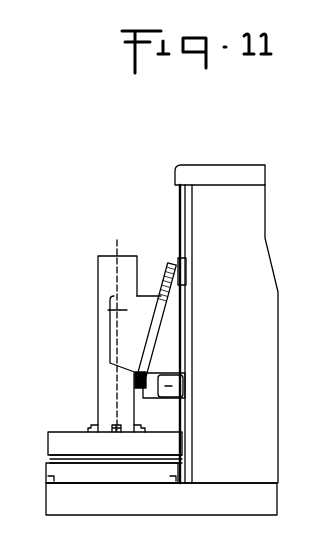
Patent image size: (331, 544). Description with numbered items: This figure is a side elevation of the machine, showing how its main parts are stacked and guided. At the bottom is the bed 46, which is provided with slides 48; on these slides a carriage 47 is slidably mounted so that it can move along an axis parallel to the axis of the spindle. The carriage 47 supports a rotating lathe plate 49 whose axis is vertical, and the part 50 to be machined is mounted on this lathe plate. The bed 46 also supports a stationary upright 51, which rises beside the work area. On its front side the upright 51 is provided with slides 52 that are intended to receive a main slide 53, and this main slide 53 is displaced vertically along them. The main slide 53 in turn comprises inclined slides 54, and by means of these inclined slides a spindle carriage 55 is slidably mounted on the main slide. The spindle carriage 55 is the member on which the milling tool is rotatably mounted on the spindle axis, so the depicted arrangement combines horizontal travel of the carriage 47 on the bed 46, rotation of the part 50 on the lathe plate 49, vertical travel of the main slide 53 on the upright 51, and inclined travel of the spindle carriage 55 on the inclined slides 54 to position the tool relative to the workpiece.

The bed 46 is at (219, 510).
The carriage 47 is at (130, 478).
The slides 48 is at (176, 478).
The rotating lathe plate 49 is at (71, 437).
The part to be machined 50 is at (108, 380).
The stationary upright 51 is at (236, 362).
The slides 52 is at (190, 208).
The main slide 53 is at (172, 321).
The inclined slides 54 is at (160, 298).
The spindle carriage 55 is at (123, 305).